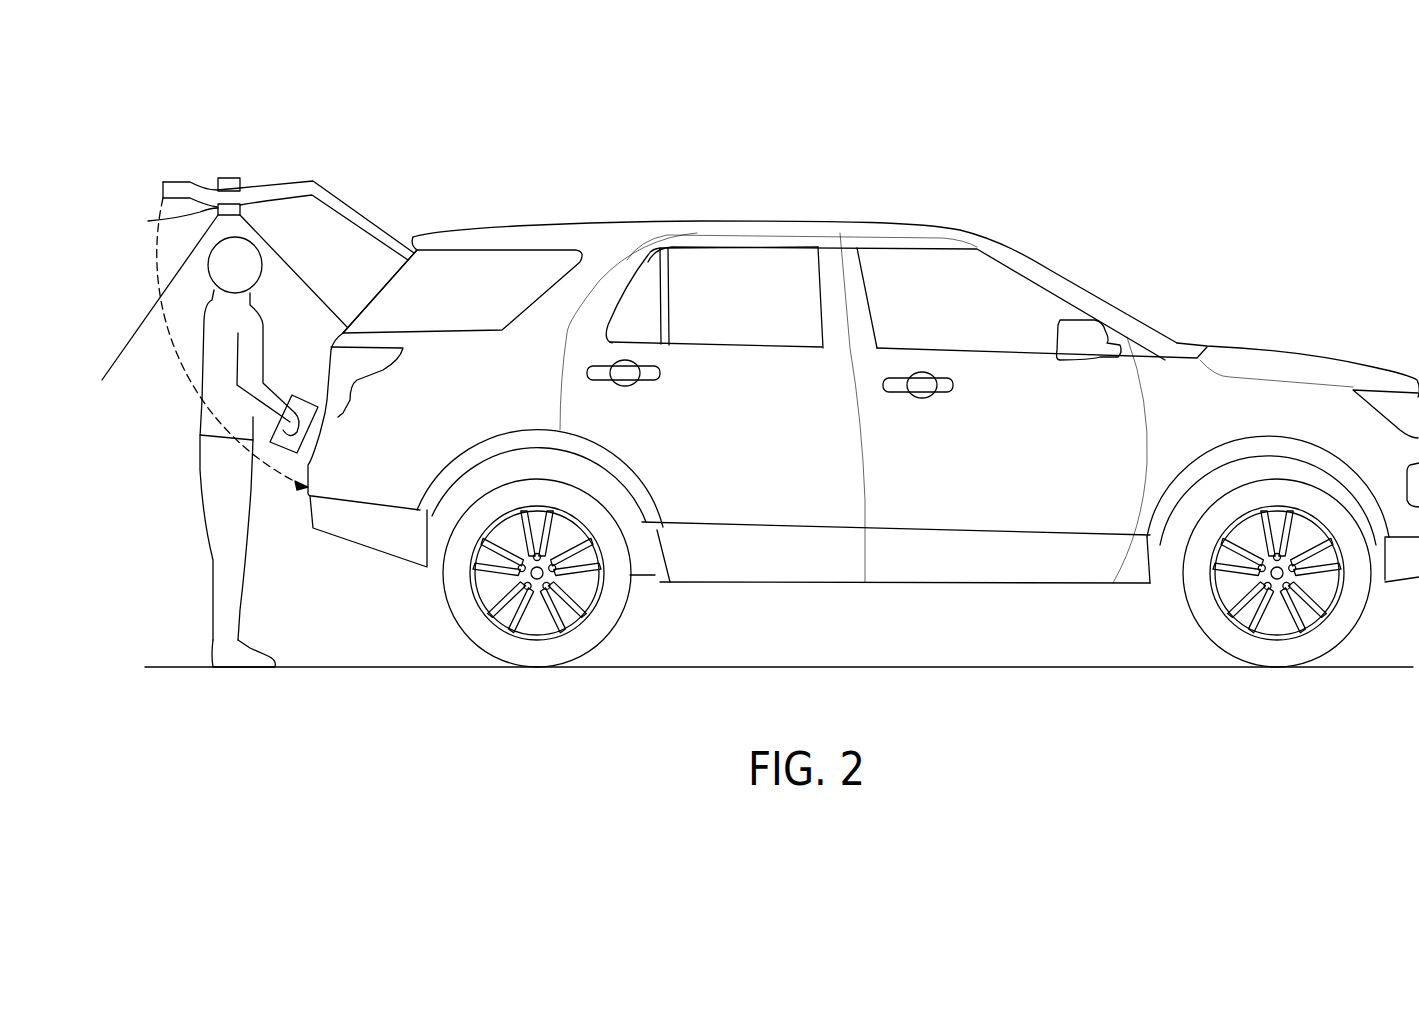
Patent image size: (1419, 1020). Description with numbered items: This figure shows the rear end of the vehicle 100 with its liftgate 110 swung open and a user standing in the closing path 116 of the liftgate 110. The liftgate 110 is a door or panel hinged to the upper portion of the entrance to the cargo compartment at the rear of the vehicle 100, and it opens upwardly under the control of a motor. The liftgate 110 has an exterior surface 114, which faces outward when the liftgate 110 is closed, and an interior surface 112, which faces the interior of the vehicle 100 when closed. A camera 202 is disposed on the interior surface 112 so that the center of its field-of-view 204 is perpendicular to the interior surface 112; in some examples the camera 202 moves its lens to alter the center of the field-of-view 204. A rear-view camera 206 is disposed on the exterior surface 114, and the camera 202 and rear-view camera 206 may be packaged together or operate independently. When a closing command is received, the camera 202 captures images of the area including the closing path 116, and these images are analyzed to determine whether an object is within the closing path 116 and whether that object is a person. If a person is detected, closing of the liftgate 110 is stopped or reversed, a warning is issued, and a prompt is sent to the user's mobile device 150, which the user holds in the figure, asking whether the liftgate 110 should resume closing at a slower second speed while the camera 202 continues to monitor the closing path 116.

The vehicle 100 is at (900, 223).
The liftgate 110 is at (318, 183).
The interior surface 112 is at (373, 243).
The exterior surface 114 is at (380, 217).
The closing path 116 is at (157, 270).
The mobile device 150 is at (308, 390).
The camera 202 is at (162, 219).
The field-of-view 204 is at (136, 352).
The rear-view camera 206 is at (231, 178).